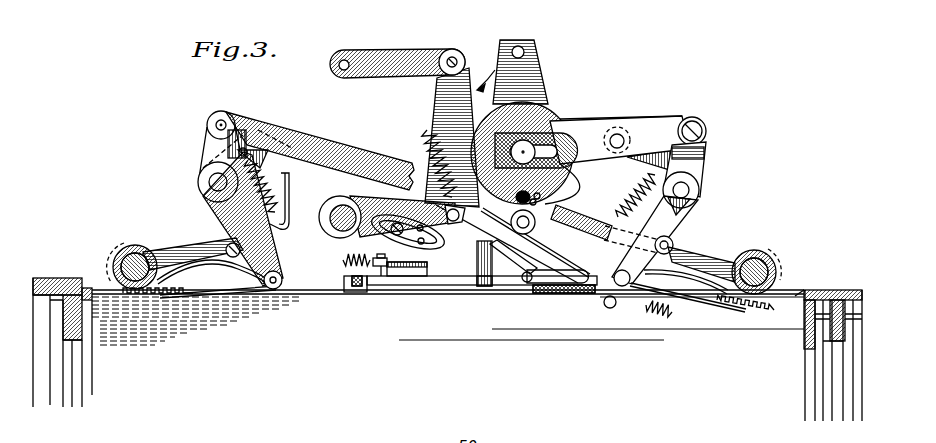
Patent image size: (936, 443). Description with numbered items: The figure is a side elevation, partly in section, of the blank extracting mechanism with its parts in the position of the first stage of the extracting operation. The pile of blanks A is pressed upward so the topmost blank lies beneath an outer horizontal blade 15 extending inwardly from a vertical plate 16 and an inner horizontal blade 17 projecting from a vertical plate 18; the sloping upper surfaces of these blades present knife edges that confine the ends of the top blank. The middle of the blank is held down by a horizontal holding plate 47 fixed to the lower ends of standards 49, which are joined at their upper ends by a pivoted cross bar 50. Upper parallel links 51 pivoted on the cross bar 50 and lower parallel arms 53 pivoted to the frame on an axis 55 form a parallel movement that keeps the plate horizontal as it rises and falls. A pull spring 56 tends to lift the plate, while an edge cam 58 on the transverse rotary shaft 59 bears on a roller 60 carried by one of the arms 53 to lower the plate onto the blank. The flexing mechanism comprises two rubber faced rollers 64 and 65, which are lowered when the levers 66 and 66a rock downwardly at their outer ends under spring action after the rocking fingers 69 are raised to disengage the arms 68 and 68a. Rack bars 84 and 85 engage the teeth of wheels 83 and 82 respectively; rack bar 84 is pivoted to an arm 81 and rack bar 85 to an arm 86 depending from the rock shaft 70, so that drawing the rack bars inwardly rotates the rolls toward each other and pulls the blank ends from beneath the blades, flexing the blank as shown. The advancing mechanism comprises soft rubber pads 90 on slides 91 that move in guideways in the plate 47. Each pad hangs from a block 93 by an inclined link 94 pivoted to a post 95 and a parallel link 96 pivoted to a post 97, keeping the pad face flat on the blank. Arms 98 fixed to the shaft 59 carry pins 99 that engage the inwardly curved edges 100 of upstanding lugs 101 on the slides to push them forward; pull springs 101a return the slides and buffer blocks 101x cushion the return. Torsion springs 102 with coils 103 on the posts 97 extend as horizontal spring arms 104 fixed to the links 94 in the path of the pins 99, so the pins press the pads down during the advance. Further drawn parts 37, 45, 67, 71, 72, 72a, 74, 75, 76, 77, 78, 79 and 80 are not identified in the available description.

The outer horizontal blade 15 is at (96, 282).
The vertical plate 16 is at (86, 322).
The inner horizontal blade 17 is at (804, 290).
The vertical plate 18 is at (804, 322).
The frame wall 37 is at (75, 368).
The frame wall 45 is at (820, 376).
The horizontal plate 47 is at (406, 295).
The standards 49 is at (435, 100).
The horizontal cross bar 50 is at (455, 58).
The upper parallel links 51 is at (389, 48).
The lower horizontal parallel arms 53 is at (352, 194).
The axis 55 is at (331, 226).
The pull spring 56 is at (427, 133).
The edge cam 58 is at (531, 198).
The transverse rotary shaft 59 is at (519, 153).
The roller 60 is at (531, 221).
The roller 64 is at (129, 252).
The roller 65 is at (752, 254).
The lever 66 is at (171, 244).
The lever 66a is at (712, 248).
The curved link 67 is at (228, 258).
The arm 68 is at (288, 194).
The arm 68a is at (598, 208).
The rocking fingers 69 is at (246, 158).
The rock shaft 70 is at (209, 184).
The pivot 71 is at (688, 190).
The hub arm 72 is at (563, 123).
The spring 72a is at (449, 186).
The arm 74 is at (638, 127).
The slot 75 is at (527, 133).
The link 76 is at (697, 160).
The link 77 is at (655, 240).
The arm 78 is at (342, 163).
The link 79 is at (206, 145).
The spring 80 is at (656, 318).
The arm 81 is at (637, 253).
The wheel 82 is at (112, 253).
The wheel 83 is at (776, 266).
The rack bar 84 is at (699, 301).
The rack bar 85 is at (238, 297).
The arm 86 is at (216, 212).
The pads 90 is at (574, 293).
The slides 91 is at (446, 280).
The block 93 is at (542, 279).
The inclined link 94 is at (572, 264).
The post 95 is at (447, 203).
The second link 96 is at (519, 272).
The post 97 is at (418, 260).
The arms 98 is at (533, 86).
The pins 99 is at (525, 51).
The inwardly curved edges 100 is at (477, 268).
The upstanding lugs 101 is at (484, 284).
The pull springs 101a is at (343, 260).
The buffer blocks 101x is at (358, 285).
The torsion springs 102 is at (399, 219).
The coils 103 is at (432, 246).
The horizontal spring arms 104 is at (515, 273).
The pile of blanks A is at (157, 354).